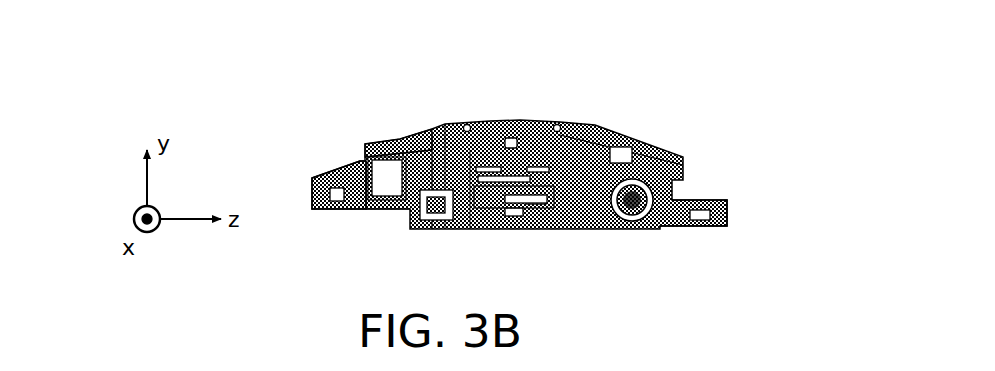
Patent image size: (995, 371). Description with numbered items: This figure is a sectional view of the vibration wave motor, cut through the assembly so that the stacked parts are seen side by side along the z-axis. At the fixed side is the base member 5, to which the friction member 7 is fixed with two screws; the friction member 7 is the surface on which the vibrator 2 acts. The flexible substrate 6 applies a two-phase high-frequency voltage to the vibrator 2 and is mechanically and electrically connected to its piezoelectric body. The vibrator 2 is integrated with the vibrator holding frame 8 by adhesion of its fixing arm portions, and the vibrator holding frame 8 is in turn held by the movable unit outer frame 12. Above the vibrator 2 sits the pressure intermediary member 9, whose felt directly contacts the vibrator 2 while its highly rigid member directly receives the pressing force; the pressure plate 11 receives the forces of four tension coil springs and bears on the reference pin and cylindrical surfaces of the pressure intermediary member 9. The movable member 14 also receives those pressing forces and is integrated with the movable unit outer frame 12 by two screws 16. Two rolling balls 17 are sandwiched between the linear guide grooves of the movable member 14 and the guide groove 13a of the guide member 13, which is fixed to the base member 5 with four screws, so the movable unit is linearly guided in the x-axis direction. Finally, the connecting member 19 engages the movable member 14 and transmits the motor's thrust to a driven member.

The vibrator 2 is at (505, 165).
The base member 5 is at (321, 165).
The flexible substrate 6 is at (390, 182).
The friction member 7 is at (498, 183).
The vibrator holding frame 8 is at (567, 132).
The pressure intermediary member 9 is at (528, 138).
The pressure plate 11 is at (482, 120).
The movable unit outer frame 12 is at (395, 135).
The guide member 13 is at (548, 203).
The guide groove 13a is at (520, 208).
The movable member 14 is at (492, 222).
The screws 16 is at (630, 140).
The rolling balls 17 is at (514, 212).
The connecting member 19 is at (705, 198).